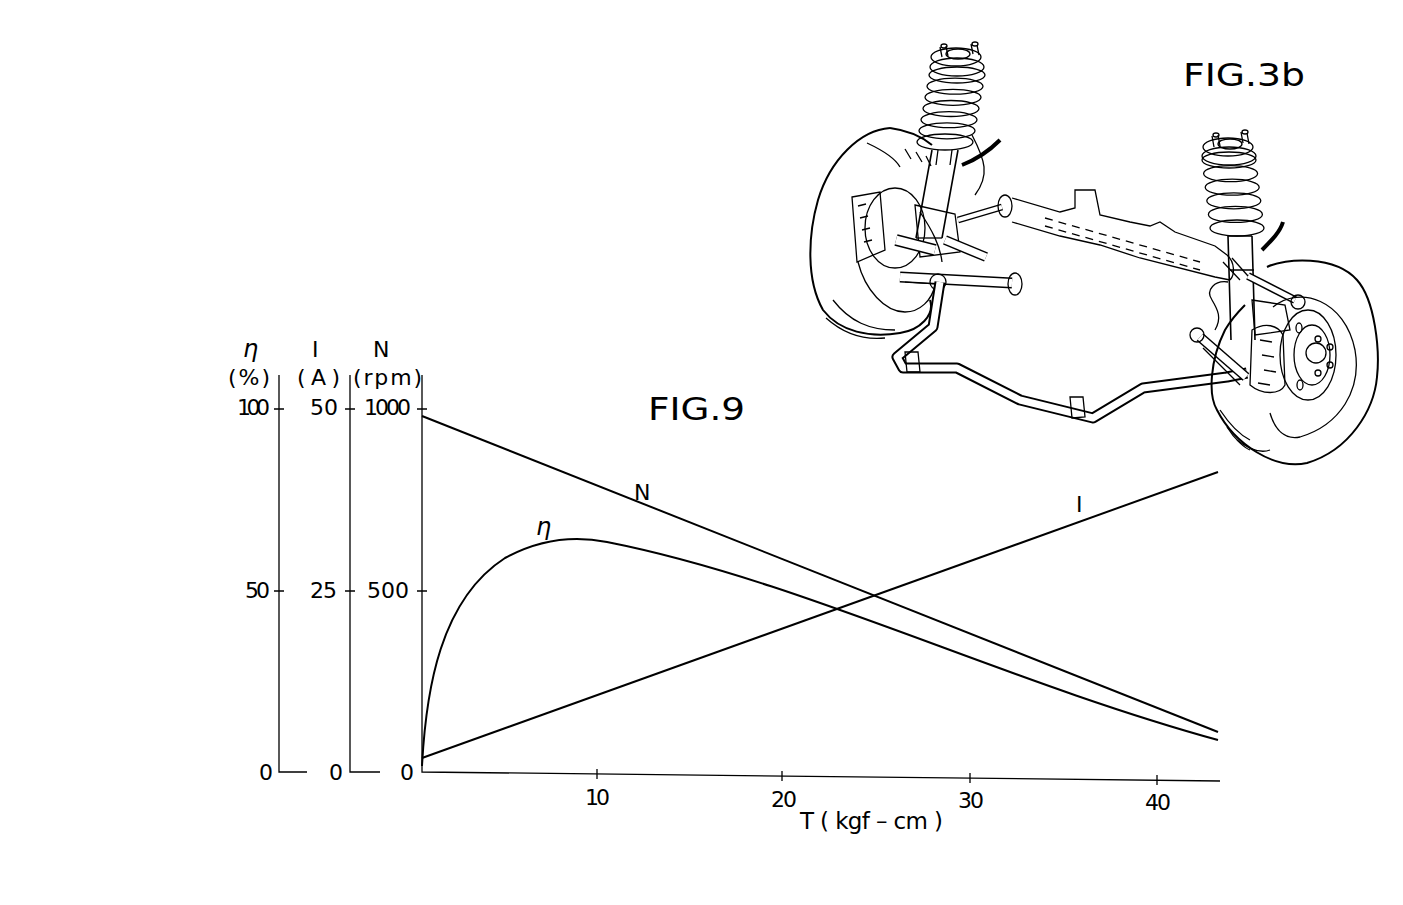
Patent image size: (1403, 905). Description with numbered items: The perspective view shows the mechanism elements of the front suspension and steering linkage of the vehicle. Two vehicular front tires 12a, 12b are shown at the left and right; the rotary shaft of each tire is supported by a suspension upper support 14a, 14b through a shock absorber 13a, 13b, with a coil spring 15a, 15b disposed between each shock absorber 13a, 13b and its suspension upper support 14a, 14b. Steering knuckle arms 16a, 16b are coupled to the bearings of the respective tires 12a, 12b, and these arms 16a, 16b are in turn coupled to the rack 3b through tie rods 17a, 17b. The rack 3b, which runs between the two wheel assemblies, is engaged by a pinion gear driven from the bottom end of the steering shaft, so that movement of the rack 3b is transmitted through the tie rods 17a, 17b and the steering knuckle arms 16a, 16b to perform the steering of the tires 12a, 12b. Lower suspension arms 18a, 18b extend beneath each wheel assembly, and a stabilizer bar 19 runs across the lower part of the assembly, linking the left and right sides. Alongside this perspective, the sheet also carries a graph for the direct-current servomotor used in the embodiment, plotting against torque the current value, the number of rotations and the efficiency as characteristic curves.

The rack 3b is at (1118, 256).
The vehicular front tire 12a is at (842, 318).
The vehicular front tire 12b is at (1336, 435).
The shock absorber 13a is at (905, 165).
The shock absorber 13b is at (1258, 270).
The suspension upper support 14a is at (985, 62).
The suspension upper support 14b is at (1255, 146).
The coil spring 15a is at (977, 122).
The coil spring 15b is at (1262, 195).
The steering knuckle arm 16a is at (962, 222).
The steering knuckle arm 16b is at (1303, 283).
The tie rod 17a is at (998, 197).
The tie rod 17b is at (1290, 292).
The lower suspension arm 18a is at (975, 290).
The lower suspension arm 18b is at (1200, 352).
The stabilizer bar 19 is at (993, 374).